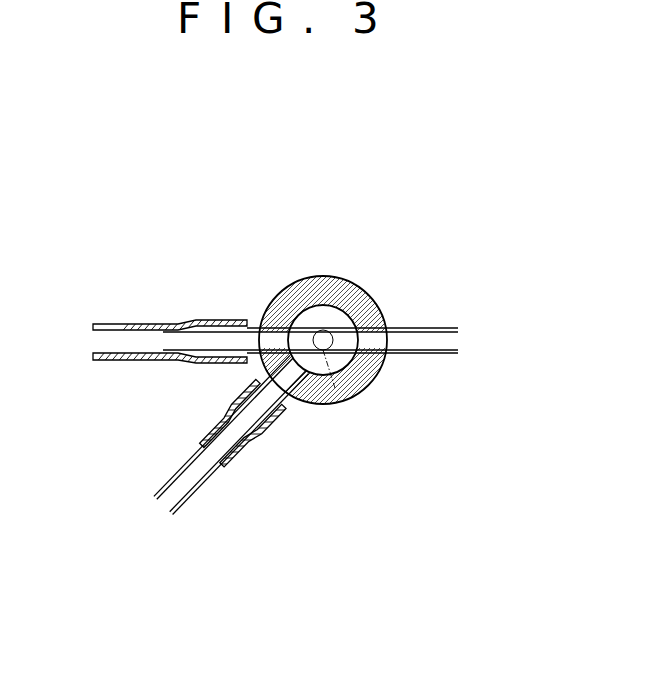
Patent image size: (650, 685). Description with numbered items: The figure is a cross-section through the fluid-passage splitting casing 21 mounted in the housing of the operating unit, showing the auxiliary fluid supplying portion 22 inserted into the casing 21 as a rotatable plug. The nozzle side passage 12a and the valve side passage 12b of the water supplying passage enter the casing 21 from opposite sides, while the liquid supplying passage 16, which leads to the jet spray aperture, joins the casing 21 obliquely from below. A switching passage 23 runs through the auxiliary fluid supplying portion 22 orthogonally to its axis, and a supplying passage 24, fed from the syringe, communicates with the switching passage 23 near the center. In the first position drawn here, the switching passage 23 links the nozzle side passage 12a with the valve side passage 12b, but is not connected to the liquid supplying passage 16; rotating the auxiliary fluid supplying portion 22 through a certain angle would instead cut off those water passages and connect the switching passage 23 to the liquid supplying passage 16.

The nozzle side passage 12a is at (129, 324).
The valve side passage 12b is at (430, 326).
The liquid supplying passage 16 is at (199, 493).
The casing 21 is at (320, 283).
The auxiliary fluid supplying portion 22 is at (360, 372).
The switching passage 23 is at (297, 338).
The supplying passage 24 is at (322, 392).